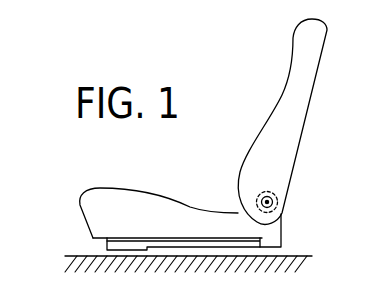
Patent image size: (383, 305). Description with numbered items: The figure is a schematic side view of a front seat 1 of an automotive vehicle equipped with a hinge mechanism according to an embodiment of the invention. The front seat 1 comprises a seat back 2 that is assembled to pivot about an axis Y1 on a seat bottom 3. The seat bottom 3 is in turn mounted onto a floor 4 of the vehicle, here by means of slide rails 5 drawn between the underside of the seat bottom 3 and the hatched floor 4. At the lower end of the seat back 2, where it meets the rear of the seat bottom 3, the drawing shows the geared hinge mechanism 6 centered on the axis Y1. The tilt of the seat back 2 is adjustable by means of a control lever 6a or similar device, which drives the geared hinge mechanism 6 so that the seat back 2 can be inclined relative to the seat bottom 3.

The front seat 1 is at (228, 99).
The seat back 2 is at (310, 63).
The seat bottom 3 is at (123, 200).
The floor 4 is at (77, 255).
The slide rails 5 is at (195, 247).
The geared hinge mechanism 6 is at (257, 196).
The control lever 6a is at (270, 205).
The axis Y1 is at (277, 200).